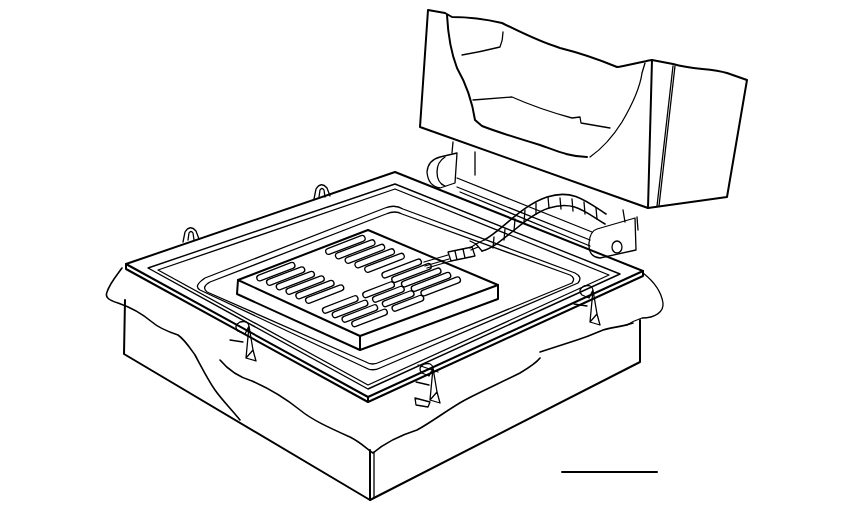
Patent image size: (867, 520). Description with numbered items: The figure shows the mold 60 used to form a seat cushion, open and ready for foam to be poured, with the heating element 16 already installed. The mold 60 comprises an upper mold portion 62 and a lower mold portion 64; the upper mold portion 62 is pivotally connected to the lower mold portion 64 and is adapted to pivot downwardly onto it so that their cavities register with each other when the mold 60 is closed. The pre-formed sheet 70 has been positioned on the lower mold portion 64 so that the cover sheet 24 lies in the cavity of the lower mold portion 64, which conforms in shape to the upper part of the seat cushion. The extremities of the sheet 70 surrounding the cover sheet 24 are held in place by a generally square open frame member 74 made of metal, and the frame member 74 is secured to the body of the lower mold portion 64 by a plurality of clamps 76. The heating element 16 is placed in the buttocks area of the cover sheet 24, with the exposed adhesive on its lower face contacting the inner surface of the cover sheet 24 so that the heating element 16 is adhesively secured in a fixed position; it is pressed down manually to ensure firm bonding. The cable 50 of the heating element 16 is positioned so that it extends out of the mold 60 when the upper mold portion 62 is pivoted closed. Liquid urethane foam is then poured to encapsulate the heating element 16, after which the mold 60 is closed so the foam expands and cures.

The mold 60 is at (152, 145).
The upper mold portion 62 is at (418, 68).
The cable 50 is at (550, 196).
The frame member 74 is at (267, 216).
The heating element 16 is at (506, 287).
The cover sheet 24 is at (344, 215).
The lower mold portion 64 is at (117, 313).
The sheet 70 is at (222, 323).
The clamps 76 is at (320, 182).